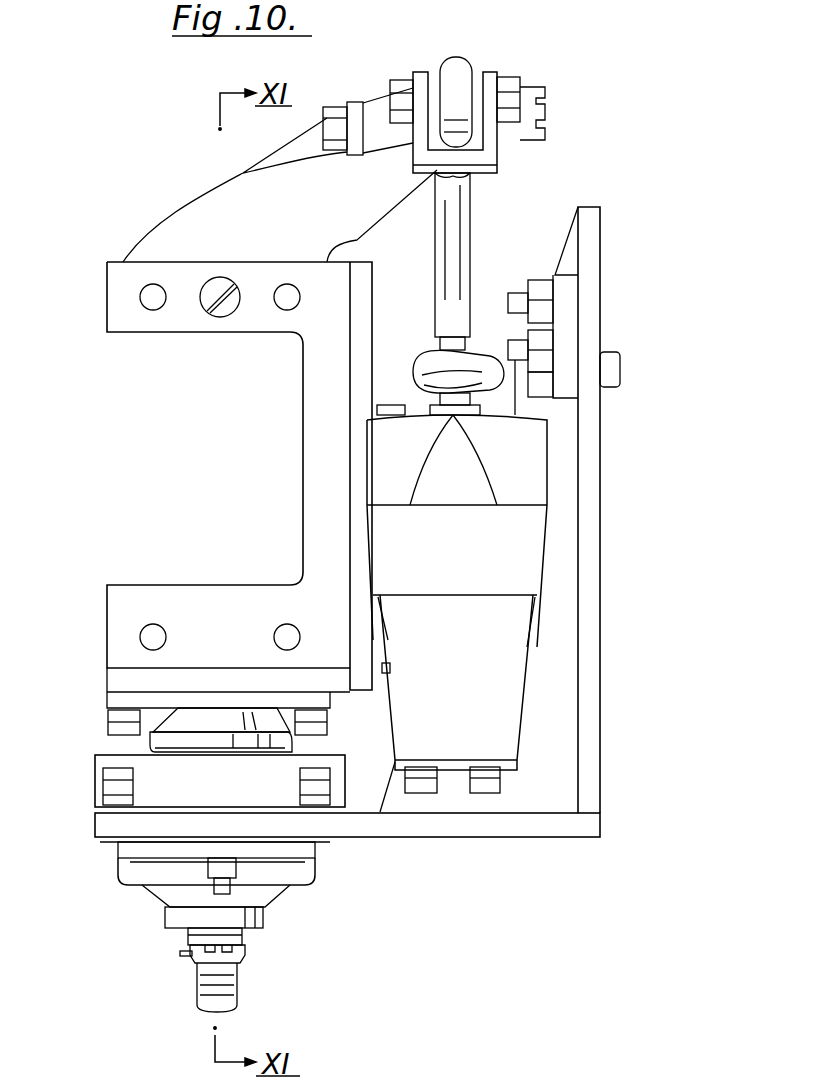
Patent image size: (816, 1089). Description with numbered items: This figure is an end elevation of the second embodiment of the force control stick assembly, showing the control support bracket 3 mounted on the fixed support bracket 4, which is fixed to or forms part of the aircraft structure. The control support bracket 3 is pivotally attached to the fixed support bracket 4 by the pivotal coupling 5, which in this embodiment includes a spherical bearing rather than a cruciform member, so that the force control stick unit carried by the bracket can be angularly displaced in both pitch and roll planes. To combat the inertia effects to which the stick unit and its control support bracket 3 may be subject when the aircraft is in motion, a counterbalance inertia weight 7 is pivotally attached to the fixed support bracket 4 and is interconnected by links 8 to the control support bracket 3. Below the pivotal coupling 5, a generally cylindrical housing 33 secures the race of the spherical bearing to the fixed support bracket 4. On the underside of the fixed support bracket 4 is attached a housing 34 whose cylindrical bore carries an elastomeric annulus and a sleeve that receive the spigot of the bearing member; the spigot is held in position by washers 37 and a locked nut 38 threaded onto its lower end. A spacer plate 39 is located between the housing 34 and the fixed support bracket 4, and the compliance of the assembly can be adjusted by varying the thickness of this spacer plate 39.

The control support bracket 3 is at (305, 458).
The fixed support bracket 4 is at (600, 620).
The pivotal coupling 5 is at (137, 742).
The counterbalance inertia weight 7 is at (535, 540).
The links 8 is at (470, 240).
The generally cylindrical housing 33 is at (96, 772).
The housing 34 is at (316, 852).
The washers 37 is at (243, 935).
The locked nut 38 is at (195, 960).
The spacer plate 39 is at (343, 838).